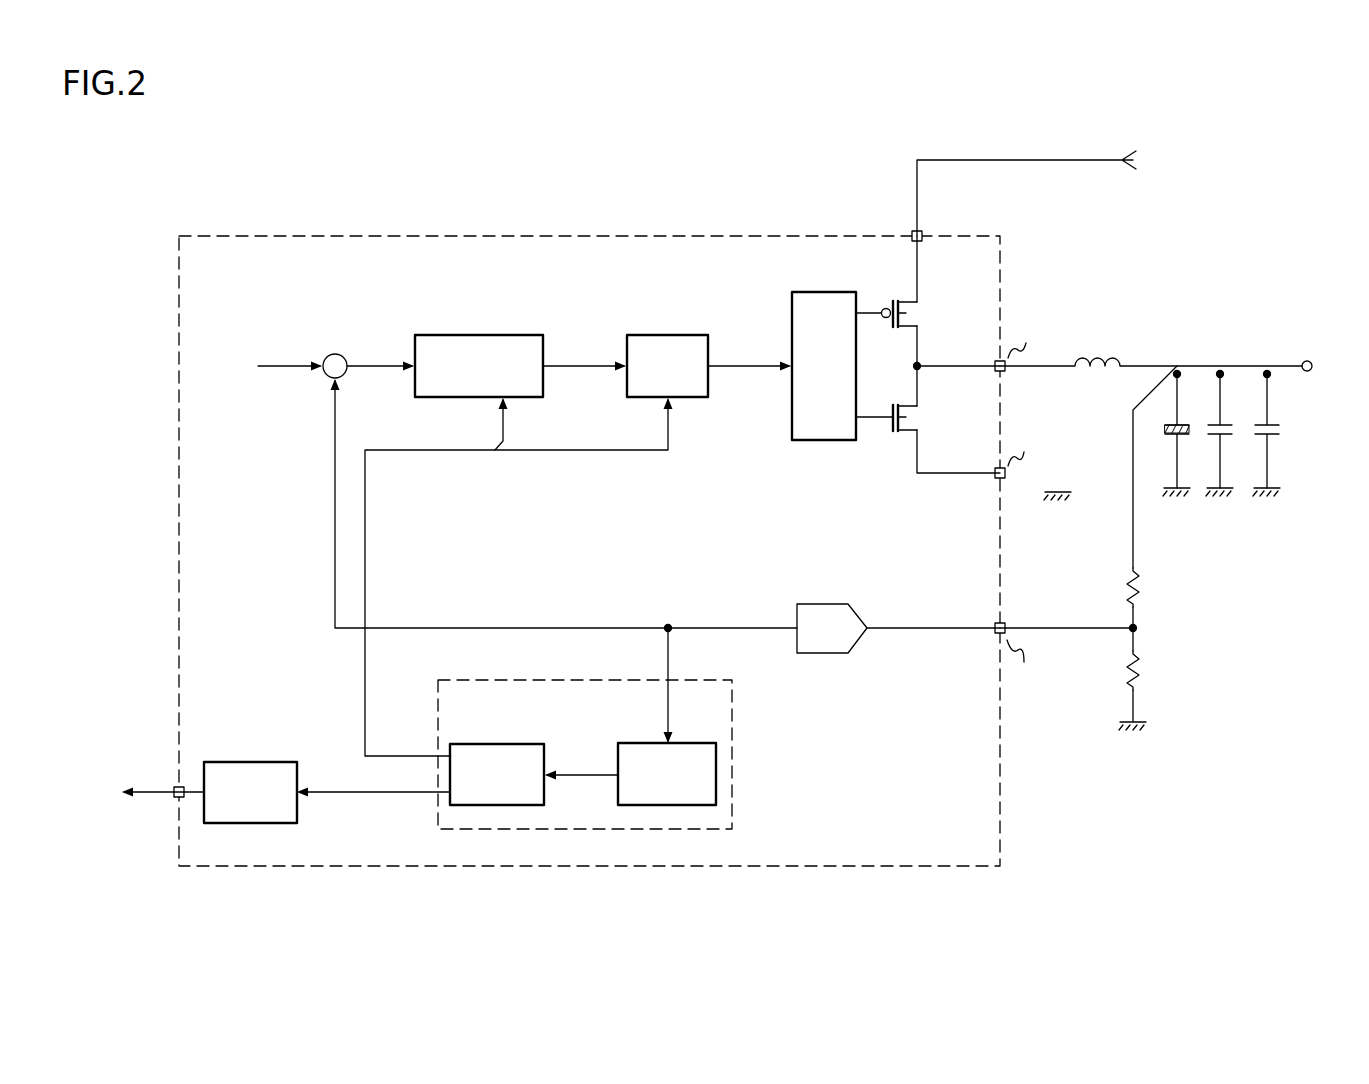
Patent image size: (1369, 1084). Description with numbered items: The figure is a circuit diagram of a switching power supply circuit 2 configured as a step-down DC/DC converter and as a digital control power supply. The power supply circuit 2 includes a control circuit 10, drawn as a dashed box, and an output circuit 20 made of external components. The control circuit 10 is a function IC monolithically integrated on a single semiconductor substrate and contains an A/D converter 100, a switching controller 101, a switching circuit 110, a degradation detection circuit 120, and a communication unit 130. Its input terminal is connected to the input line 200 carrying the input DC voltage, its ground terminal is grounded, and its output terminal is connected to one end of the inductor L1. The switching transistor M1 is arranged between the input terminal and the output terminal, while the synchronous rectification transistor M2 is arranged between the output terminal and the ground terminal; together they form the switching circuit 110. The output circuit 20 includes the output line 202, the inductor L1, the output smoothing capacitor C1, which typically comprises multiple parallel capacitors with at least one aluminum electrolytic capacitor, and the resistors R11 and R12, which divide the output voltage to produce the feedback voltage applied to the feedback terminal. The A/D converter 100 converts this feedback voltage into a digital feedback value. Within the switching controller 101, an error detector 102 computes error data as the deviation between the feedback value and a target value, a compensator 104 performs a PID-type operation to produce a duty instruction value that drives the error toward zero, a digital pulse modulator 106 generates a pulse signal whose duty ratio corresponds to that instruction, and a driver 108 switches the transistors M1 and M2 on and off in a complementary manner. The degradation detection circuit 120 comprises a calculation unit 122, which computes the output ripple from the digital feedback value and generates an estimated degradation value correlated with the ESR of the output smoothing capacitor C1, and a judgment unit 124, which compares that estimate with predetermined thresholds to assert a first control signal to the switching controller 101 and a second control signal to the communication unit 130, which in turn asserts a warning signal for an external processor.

The switching power supply circuit 2 is at (1322, 161).
The control circuit 10 is at (645, 866).
The output circuit 20 is at (1287, 734).
The A/D converter 100 is at (820, 604).
The switching controller 101 is at (865, 484).
The error detector 102 is at (338, 354).
The compensator 104 is at (500, 335).
The digital pulse modulator 106 is at (660, 335).
The driver 108 is at (822, 292).
The switching circuit 110 is at (943, 484).
The degradation detection circuit 120 is at (733, 812).
The calculation unit 122 is at (685, 743).
The judgment unit 124 is at (492, 744).
The communication unit 130 is at (252, 762).
The input line 200 is at (1093, 162).
The output line 202 is at (1242, 364).
The switching transistor M1 is at (911, 314).
The synchronous rectification transistor M2 is at (911, 418).
The inductor L1 is at (1105, 357).
The output smoothing capacitor C1 is at (1287, 501).
The resistor R11 is at (1163, 587).
The resistor R12 is at (1163, 670).